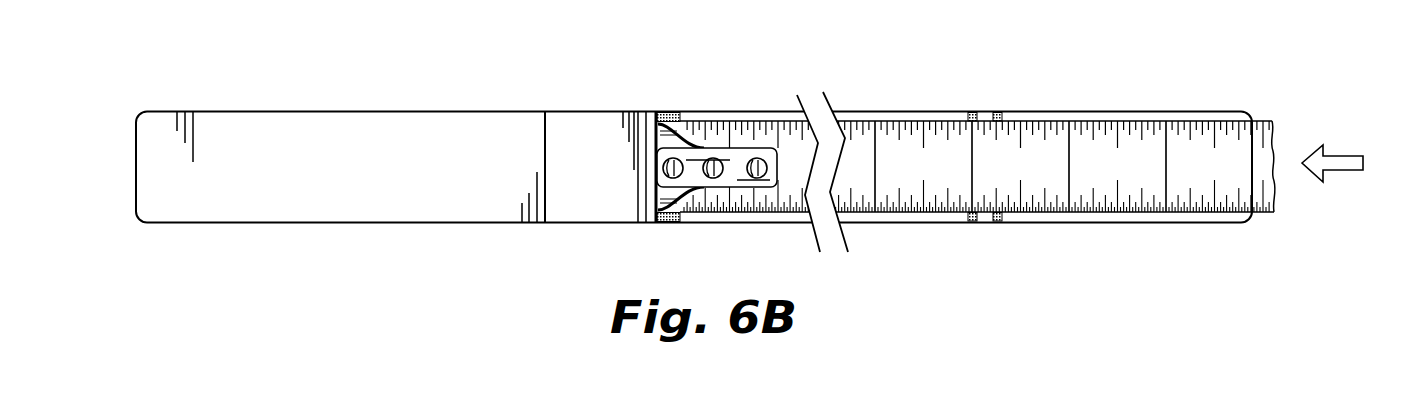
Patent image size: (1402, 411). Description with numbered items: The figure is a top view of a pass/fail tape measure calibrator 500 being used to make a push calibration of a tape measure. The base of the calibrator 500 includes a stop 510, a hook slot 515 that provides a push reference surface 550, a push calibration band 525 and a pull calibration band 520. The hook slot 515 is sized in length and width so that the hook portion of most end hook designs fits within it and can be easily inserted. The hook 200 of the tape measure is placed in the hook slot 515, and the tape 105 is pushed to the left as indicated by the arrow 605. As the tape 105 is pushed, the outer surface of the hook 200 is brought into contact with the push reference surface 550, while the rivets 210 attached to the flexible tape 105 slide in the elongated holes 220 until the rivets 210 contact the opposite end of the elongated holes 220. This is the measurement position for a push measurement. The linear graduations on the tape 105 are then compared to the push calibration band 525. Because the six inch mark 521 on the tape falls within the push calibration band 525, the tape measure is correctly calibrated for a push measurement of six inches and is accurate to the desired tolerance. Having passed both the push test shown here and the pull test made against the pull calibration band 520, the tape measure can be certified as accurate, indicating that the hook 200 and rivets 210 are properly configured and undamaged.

The pass/fail tape measure calibrator 500 is at (236, 56).
The stop 510 is at (607, 205).
The push reference surface 550 is at (643, 112).
The hook slot 515 is at (668, 113).
The tape 105 is at (1177, 118).
The hook 200 is at (654, 206).
The rivets 210 is at (759, 190).
The elongated holes 220 is at (738, 190).
The push calibration band 525 is at (970, 112).
The six inch mark 521 is at (994, 114).
The pull calibration band 520 is at (996, 222).
The arrow 605 is at (1323, 160).